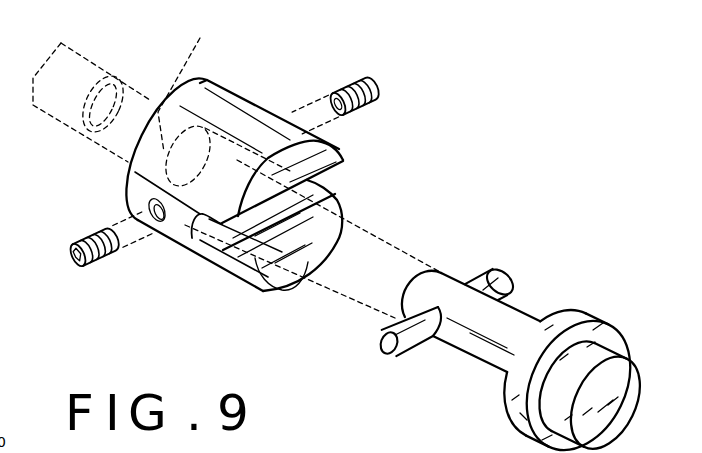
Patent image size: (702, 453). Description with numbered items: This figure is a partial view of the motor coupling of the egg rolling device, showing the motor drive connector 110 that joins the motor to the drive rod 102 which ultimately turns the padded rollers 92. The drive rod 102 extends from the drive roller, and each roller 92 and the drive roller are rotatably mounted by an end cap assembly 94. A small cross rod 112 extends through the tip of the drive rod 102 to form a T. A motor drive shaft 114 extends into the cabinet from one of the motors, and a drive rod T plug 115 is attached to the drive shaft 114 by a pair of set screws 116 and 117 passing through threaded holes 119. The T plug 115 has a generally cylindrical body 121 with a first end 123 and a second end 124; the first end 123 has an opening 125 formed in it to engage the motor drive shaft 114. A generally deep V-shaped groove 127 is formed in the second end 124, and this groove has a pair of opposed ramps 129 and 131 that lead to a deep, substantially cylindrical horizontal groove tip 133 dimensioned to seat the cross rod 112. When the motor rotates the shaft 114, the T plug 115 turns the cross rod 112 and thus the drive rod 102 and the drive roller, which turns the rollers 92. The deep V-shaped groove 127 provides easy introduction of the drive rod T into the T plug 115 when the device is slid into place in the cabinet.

The padded roller 92 is at (613, 395).
The end cap assembly 94 is at (581, 322).
The drive rod 102 is at (508, 325).
The motor drive connector 110 is at (284, 85).
The cross rod 112 is at (496, 276).
The motor drive shaft 114 is at (76, 60).
The drive rod T plug 115 is at (344, 149).
The set screw 116 is at (94, 272).
The set screw 117 is at (378, 90).
The threaded hole 119 is at (148, 204).
The cylindrical body 121 is at (293, 112).
The first end 123 is at (270, 122).
The second end 124 is at (343, 172).
The opening 125 is at (188, 85).
The V-shaped groove 127 is at (203, 262).
The ramp 129 is at (337, 201).
The ramp 131 is at (281, 278).
The groove tip 133 is at (195, 234).